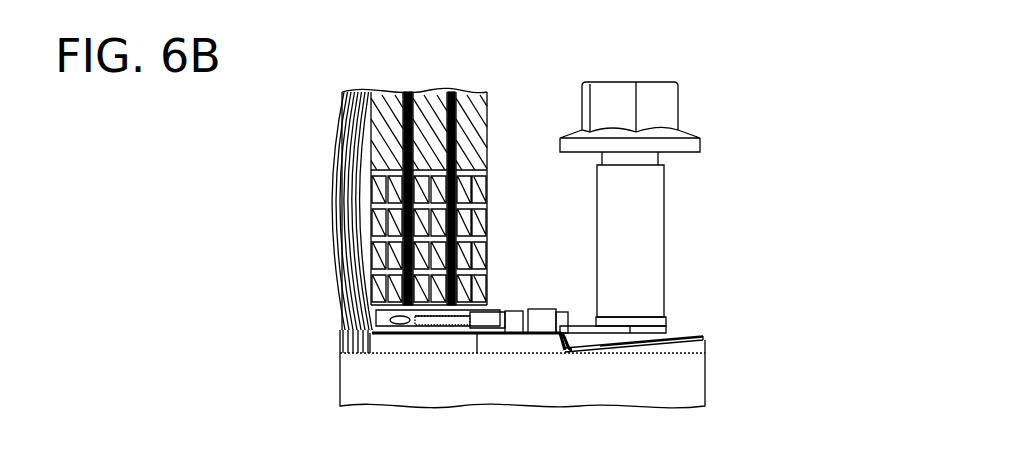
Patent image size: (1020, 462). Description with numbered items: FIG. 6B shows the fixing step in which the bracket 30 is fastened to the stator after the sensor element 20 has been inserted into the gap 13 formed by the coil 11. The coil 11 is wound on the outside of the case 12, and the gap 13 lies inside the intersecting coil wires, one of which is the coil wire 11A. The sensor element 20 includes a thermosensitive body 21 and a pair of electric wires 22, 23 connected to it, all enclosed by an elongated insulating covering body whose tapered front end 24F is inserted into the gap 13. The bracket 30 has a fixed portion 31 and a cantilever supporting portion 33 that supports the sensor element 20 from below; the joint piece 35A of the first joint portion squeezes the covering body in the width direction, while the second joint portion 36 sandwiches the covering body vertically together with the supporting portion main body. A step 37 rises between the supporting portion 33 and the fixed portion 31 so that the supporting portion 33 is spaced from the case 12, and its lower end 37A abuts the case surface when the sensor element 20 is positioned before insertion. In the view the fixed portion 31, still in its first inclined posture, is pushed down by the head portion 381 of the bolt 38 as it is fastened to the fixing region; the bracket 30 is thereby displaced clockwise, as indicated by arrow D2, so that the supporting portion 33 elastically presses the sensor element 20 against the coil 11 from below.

The coil 11 is at (481, 93).
The coil wire 11A is at (480, 304).
The case 12 is at (612, 396).
The gap 13 is at (424, 336).
The sensor element 20 is at (370, 290).
The thermosensitive body 21 is at (374, 354).
The electric wire 22 is at (598, 316).
The electric wire 23 is at (632, 324).
The front end 24F is at (350, 324).
The bracket 30 is at (634, 350).
The fixed portion 31 is at (682, 336).
The supporting portion 33 is at (466, 336).
The joint piece 35A is at (538, 310).
The second joint portion 36 is at (555, 310).
The step 37 is at (540, 338).
The lower end 37A is at (573, 354).
The bolt 38 is at (661, 204).
The head portion 381 is at (678, 114).
The arrow D2 is at (668, 345).